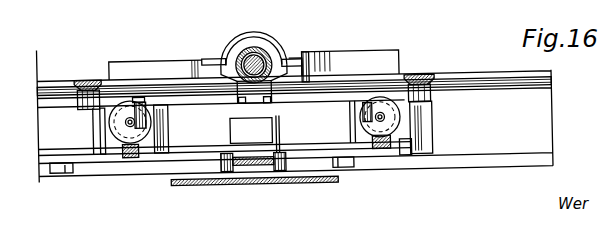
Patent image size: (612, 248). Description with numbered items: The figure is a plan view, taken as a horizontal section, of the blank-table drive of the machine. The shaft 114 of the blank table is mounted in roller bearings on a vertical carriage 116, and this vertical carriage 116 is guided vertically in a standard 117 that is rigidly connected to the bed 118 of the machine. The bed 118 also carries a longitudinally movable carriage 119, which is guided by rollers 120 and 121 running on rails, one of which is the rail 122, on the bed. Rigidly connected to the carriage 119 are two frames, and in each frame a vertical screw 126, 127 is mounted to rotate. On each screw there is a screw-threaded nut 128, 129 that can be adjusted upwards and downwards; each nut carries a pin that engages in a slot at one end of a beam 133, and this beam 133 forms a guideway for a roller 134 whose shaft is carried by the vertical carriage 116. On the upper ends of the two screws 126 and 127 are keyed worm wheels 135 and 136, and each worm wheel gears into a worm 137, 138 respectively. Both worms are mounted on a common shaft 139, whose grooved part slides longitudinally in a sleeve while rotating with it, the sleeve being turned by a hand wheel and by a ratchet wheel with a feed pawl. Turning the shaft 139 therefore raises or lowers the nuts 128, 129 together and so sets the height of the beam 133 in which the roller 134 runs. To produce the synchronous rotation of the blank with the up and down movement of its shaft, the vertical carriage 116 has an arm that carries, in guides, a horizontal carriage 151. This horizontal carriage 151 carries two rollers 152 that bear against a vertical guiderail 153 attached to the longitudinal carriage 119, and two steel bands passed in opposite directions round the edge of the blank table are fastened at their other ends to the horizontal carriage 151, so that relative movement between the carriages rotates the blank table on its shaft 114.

The shaft 114 is at (256, 50).
The vertical carriage 116 is at (238, 48).
The standard 117 is at (275, 57).
The bed 118 is at (545, 113).
The longitudinally movable carriage 119 is at (432, 142).
The roller 120 is at (60, 174).
The roller 121 is at (88, 80).
The rail 122 is at (465, 78).
The vertical screw 126 is at (173, 133).
The vertical screw 127 is at (370, 122).
The nut 128 is at (148, 113).
The nut 129 is at (360, 115).
The beam 133 is at (303, 100).
The roller 134 is at (210, 97).
The worm wheel 135 is at (112, 128).
The worm wheel 136 is at (425, 115).
The worm 137 is at (132, 157).
The worm 138 is at (378, 155).
The shaft 139 is at (173, 150).
The horizontal carriage 151 is at (197, 183).
The roller 152 is at (265, 181).
The vertical guiderail 153 is at (247, 158).